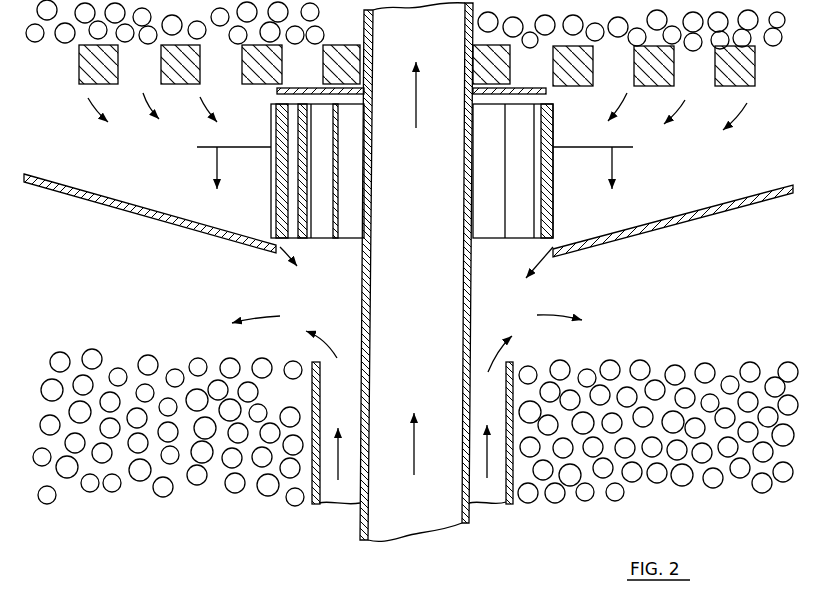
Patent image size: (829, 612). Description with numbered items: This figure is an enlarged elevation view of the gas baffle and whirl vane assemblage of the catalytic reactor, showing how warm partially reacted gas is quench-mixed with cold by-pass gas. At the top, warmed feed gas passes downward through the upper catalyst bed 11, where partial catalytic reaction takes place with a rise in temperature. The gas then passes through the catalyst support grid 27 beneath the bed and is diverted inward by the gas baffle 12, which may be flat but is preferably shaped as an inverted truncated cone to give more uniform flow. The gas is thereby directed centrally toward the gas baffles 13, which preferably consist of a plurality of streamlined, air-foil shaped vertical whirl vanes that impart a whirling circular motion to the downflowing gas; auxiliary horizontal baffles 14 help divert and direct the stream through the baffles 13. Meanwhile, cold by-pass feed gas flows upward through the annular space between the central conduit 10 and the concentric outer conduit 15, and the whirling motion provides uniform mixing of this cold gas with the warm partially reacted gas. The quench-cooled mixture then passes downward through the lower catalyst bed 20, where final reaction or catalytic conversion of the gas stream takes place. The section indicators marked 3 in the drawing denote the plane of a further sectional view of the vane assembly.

The central conduit 10 is at (374, 32).
The upper catalyst bed 11 is at (168, 21).
The gas baffle 12 is at (70, 194).
The gas baffles 13 is at (271, 192).
The auxiliary horizontal baffles 14 is at (290, 88).
The concentric outer conduit 15 is at (312, 403).
The lower catalyst bed 20 is at (170, 363).
The catalyst support grid 27 is at (79, 62).
The section line for FIG. 3 is at (415, 179).